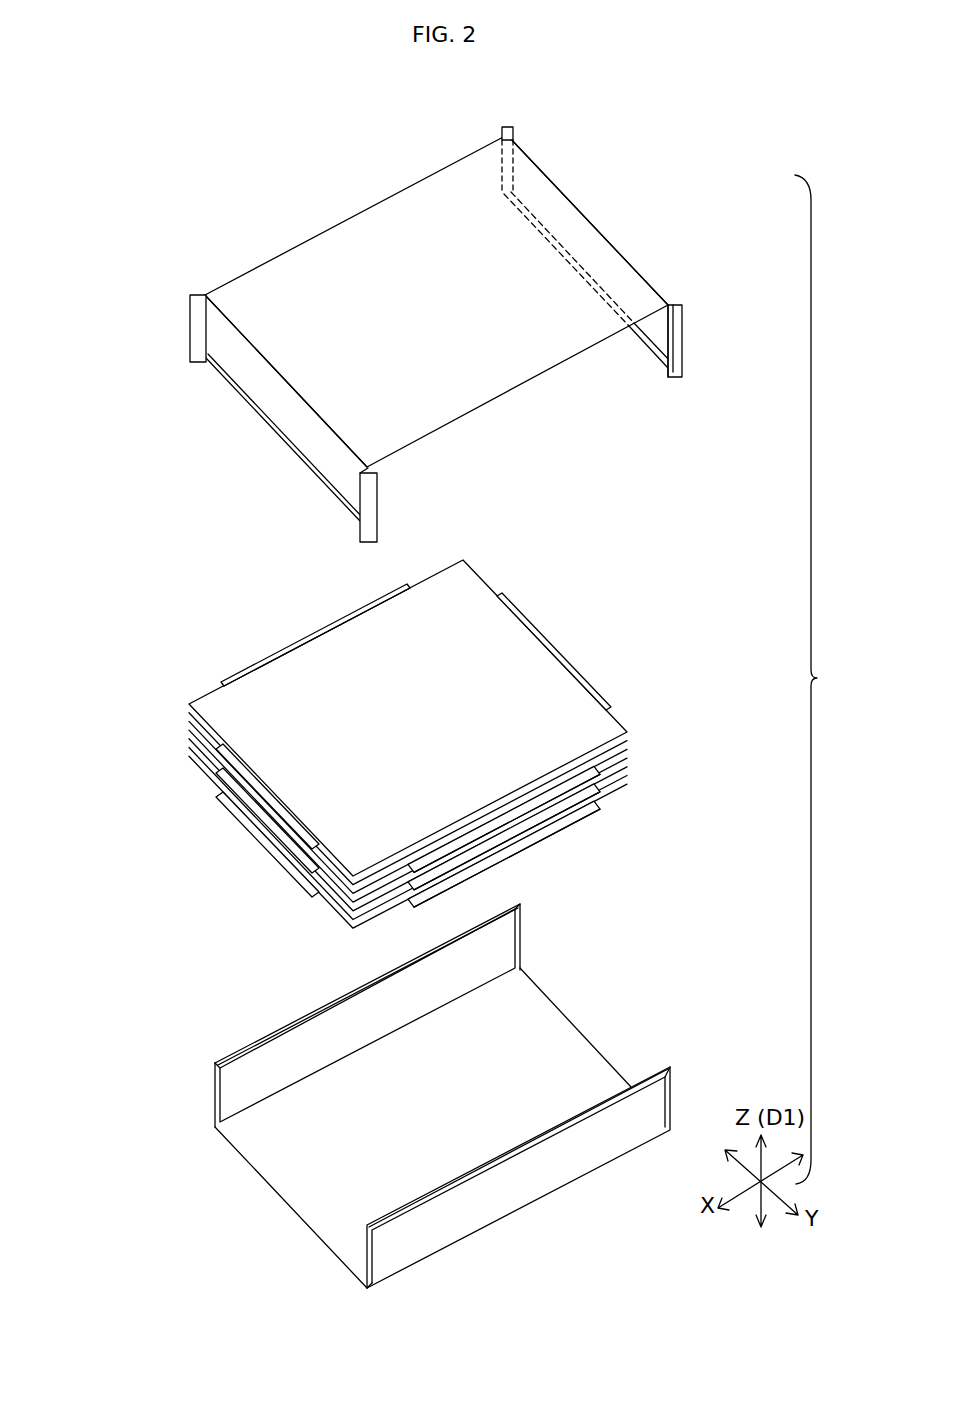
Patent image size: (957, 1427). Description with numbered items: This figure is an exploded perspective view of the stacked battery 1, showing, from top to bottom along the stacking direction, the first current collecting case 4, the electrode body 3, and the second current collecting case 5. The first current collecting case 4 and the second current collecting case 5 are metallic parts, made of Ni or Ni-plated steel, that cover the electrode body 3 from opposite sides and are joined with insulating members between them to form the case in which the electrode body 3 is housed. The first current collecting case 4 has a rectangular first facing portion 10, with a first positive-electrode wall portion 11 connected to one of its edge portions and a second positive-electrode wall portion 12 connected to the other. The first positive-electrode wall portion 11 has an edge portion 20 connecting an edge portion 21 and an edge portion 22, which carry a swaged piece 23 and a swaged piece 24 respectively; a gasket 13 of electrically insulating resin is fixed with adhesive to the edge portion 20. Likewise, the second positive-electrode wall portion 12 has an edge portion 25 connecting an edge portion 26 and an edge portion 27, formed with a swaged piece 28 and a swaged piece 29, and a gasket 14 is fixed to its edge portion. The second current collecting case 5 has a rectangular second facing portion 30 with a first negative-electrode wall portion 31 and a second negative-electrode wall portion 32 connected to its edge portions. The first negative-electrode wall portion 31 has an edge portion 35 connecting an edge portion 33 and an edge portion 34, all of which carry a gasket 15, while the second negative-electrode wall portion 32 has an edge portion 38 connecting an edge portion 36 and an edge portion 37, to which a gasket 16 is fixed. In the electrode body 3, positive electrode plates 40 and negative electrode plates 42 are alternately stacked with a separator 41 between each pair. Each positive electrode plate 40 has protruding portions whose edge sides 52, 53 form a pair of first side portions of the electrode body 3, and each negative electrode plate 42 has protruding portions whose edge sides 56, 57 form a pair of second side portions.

The stacked battery 1 is at (817, 679).
The electrode body 3 is at (408, 744).
The first current collecting case 4 is at (434, 322).
The second current collecting case 5 is at (407, 1091).
The first facing portion 10 is at (347, 247).
The first positive-electrode wall portion 11 is at (292, 434).
The second positive-electrode wall portion 12 is at (622, 273).
The gasket 13 is at (309, 472).
The gasket 14 is at (647, 345).
The gasket 15 is at (355, 1001).
The gasket 16 is at (506, 1174).
The edge portion 20 is at (364, 508).
The edge portion 21 is at (399, 482).
The edge portion 22 is at (167, 301).
The swaged piece 23 is at (373, 515).
The swaged piece 24 is at (197, 335).
The edge portion 25 is at (686, 370).
The edge portion 26 is at (711, 327).
The edge portion 27 is at (478, 144).
The swaged piece 28 is at (681, 355).
The swaged piece 29 is at (500, 157).
The second facing portion 30 is at (297, 1195).
The first negative-electrode wall portion 31 is at (230, 1093).
The second negative-electrode wall portion 32 is at (572, 1173).
The edge portion 33 is at (206, 1068).
The edge portion 34 is at (534, 920).
The edge portion 35 is at (294, 995).
The edge portion 36 is at (356, 1264).
The edge portion 37 is at (681, 1088).
The edge portion 38 is at (524, 1125).
The positive electrode plate 40 is at (220, 745).
The separator 41 is at (488, 633).
The negative electrode plate 42 is at (290, 648).
The edge side 52 is at (568, 658).
The edge side 53 is at (297, 846).
The edge side 56 is at (533, 818).
The edge side 57 is at (326, 624).